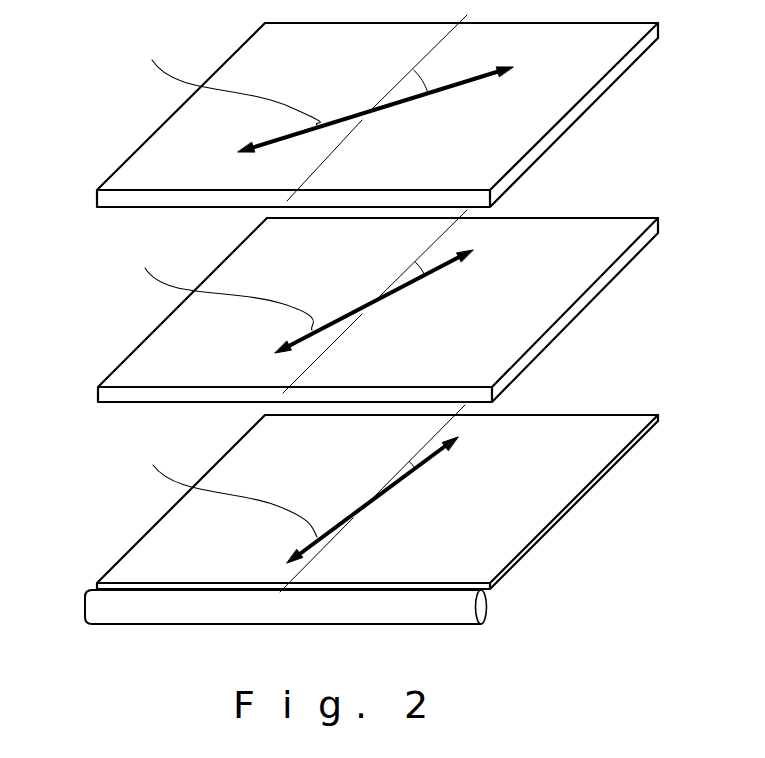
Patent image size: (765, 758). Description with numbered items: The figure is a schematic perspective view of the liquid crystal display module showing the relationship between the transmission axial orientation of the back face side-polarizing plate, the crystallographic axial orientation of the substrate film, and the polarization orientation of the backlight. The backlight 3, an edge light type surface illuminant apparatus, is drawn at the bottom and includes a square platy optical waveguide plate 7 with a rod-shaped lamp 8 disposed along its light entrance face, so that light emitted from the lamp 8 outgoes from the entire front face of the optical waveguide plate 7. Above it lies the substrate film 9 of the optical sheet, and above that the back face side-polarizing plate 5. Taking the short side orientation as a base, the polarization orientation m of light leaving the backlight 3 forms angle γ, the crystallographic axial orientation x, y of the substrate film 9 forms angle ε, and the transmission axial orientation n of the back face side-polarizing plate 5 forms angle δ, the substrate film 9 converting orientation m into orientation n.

The backlight 3 is at (341, 514).
The back face side-polarizing plate 5 is at (590, 103).
The optical waveguide plate 7 is at (585, 500).
The lamp 8 is at (480, 608).
The substrate film 9 is at (587, 302).